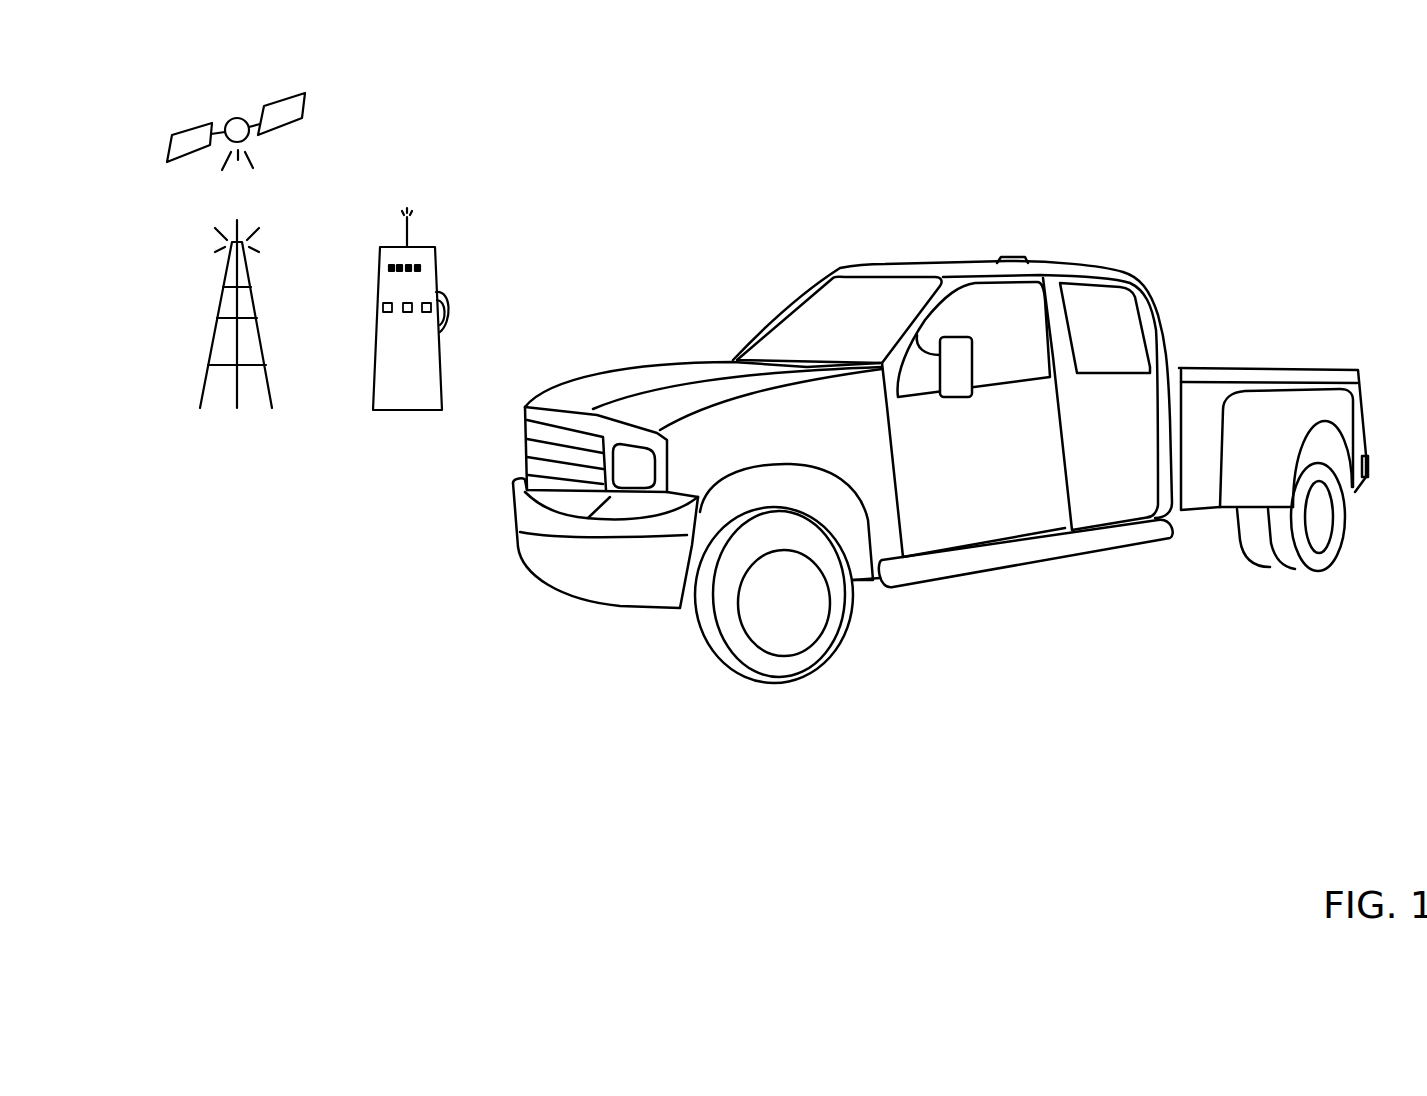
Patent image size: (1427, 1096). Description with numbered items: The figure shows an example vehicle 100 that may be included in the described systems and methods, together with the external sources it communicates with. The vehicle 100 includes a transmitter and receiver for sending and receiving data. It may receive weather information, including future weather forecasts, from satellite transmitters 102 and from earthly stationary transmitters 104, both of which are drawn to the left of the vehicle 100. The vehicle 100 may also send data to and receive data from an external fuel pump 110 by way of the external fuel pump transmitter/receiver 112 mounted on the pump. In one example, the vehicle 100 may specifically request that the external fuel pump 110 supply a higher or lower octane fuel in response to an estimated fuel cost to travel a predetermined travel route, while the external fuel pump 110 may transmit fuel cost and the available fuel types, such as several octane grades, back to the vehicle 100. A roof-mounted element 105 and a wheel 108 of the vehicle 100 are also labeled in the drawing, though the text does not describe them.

The vehicle 100 is at (536, 187).
The satellite transmitter 102 is at (226, 120).
The earthly stationary transmitter 104 is at (210, 350).
The vehicle antenna 105 is at (1005, 262).
The wheel 108 is at (1293, 562).
The external fuel pump 110 is at (375, 357).
The external fuel pump transmitter/receiver 112 is at (407, 240).